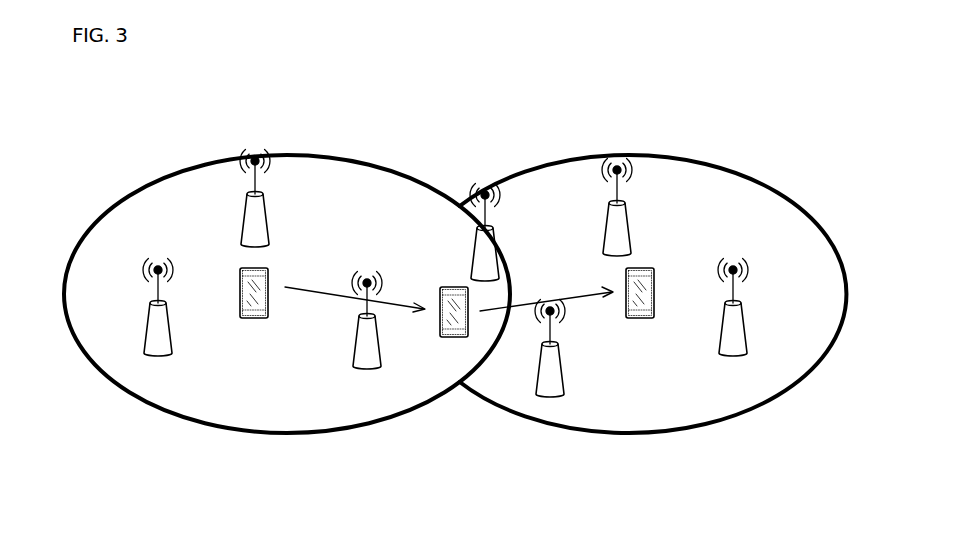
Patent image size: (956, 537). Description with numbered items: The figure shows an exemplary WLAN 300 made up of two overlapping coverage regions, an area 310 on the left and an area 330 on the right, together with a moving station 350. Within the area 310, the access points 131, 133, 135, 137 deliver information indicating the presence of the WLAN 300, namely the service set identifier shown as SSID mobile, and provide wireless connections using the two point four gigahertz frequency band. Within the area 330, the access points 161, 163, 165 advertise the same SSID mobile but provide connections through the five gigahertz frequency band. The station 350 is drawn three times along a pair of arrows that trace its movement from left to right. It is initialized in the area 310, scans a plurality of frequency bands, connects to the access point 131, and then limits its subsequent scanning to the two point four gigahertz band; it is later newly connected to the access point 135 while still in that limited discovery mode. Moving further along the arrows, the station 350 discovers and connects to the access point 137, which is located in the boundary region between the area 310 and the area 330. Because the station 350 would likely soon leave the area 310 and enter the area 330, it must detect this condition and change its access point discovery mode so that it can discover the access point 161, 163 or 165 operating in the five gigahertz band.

The WLAN 300 is at (113, 131).
The area 310 is at (390, 421).
The area 330 is at (743, 413).
The access point 131 is at (148, 335).
The access point 133 is at (271, 218).
The access point 135 is at (384, 338).
The access point 137 is at (475, 256).
The access point 161 is at (566, 366).
The access point 163 is at (634, 226).
The access point 165 is at (746, 317).
The station 350 is at (268, 308).